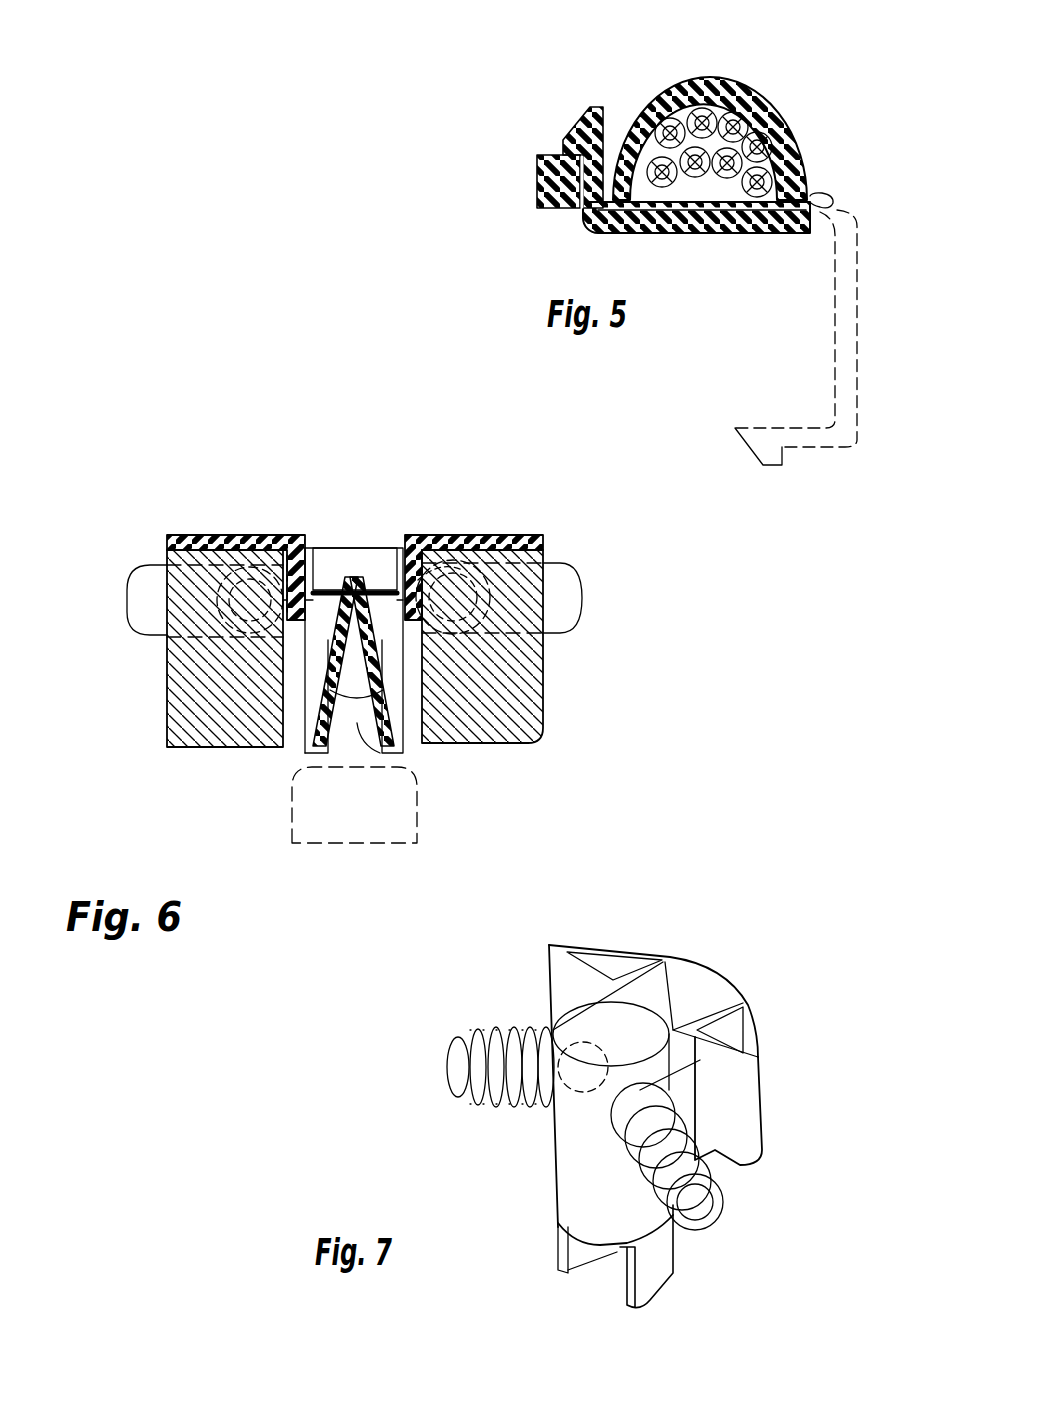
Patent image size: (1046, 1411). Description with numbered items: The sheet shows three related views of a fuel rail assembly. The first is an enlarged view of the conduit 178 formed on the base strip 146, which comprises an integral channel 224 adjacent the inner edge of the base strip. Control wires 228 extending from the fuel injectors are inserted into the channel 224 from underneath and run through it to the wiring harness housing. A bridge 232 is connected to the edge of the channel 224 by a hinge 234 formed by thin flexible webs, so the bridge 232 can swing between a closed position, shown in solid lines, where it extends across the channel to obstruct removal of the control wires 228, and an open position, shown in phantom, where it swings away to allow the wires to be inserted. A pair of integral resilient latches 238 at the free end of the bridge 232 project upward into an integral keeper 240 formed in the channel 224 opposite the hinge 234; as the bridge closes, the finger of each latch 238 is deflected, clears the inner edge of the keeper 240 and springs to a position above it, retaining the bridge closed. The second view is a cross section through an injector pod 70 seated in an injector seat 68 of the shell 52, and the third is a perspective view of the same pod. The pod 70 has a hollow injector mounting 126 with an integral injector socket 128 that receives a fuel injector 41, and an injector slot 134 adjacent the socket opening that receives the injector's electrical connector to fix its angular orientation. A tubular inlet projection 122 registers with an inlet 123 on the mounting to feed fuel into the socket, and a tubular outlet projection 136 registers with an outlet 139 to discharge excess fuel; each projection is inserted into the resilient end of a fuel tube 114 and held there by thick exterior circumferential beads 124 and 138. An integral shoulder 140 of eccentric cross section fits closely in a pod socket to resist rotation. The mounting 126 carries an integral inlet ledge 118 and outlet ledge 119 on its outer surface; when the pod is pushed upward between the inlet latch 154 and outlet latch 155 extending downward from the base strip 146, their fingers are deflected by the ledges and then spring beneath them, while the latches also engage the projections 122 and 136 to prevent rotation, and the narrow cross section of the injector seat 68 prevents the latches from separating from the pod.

In FIG. 5, the conduit 178 is at (748, 66).
In FIG. 5, the channel 224 is at (776, 118).
In FIG. 5, the control wires 228 is at (670, 118).
In FIG. 5, the bridge 232 is at (765, 218).
In FIG. 5, the hinge 234 is at (830, 197).
In FIG. 5, the latch 238 is at (563, 140).
In FIG. 5, the keeper 240 is at (550, 202).
In FIG. 6, the injector pod 70 is at (372, 538).
In FIG. 7, the injector pod 70 is at (747, 987).
In FIG. 6, the shell 52 is at (168, 713).
In FIG. 6, the base strip 146 is at (178, 538).
In FIG. 6, the fuel tube 114 is at (140, 577).
In FIG. 6, the injector seat 68 is at (260, 602).
In FIG. 6, the exterior circumferential beads 124 is at (223, 535).
In FIG. 7, the exterior circumferential beads 124 is at (478, 1106).
In FIG. 6, the outlet projection 136 is at (443, 590).
In FIG. 7, the outlet projection 136 is at (707, 1231).
In FIG. 6, the exterior circumferential beads 138 is at (462, 530).
In FIG. 7, the exterior circumferential beads 138 is at (712, 1148).
In FIG. 6, the inlet projection 122 is at (278, 577).
In FIG. 7, the inlet projection 122 is at (447, 1065).
In FIG. 6, the inlet ledge 118 is at (323, 587).
In FIG. 6, the outlet ledge 119 is at (385, 587).
In FIG. 7, the outlet ledge 119 is at (664, 1084).
In FIG. 6, the injector mounting 126 is at (310, 667).
In FIG. 7, the injector mounting 126 is at (561, 1146).
In FIG. 6, the injector socket 128 is at (355, 668).
In FIG. 7, the injector socket 128 is at (617, 1255).
In FIG. 6, the injector slot 134 is at (357, 727).
In FIG. 7, the injector slot 134 is at (597, 1258).
In FIG. 6, the inlet latch 154 is at (275, 635).
In FIG. 6, the outlet latch 155 is at (443, 633).
In FIG. 6, the fuel injector 41 is at (312, 815).
In FIG. 7, the shoulder 140 is at (695, 961).
In FIG. 7, the inlet 123 is at (550, 1012).
In FIG. 7, the outlet 139 is at (617, 1113).